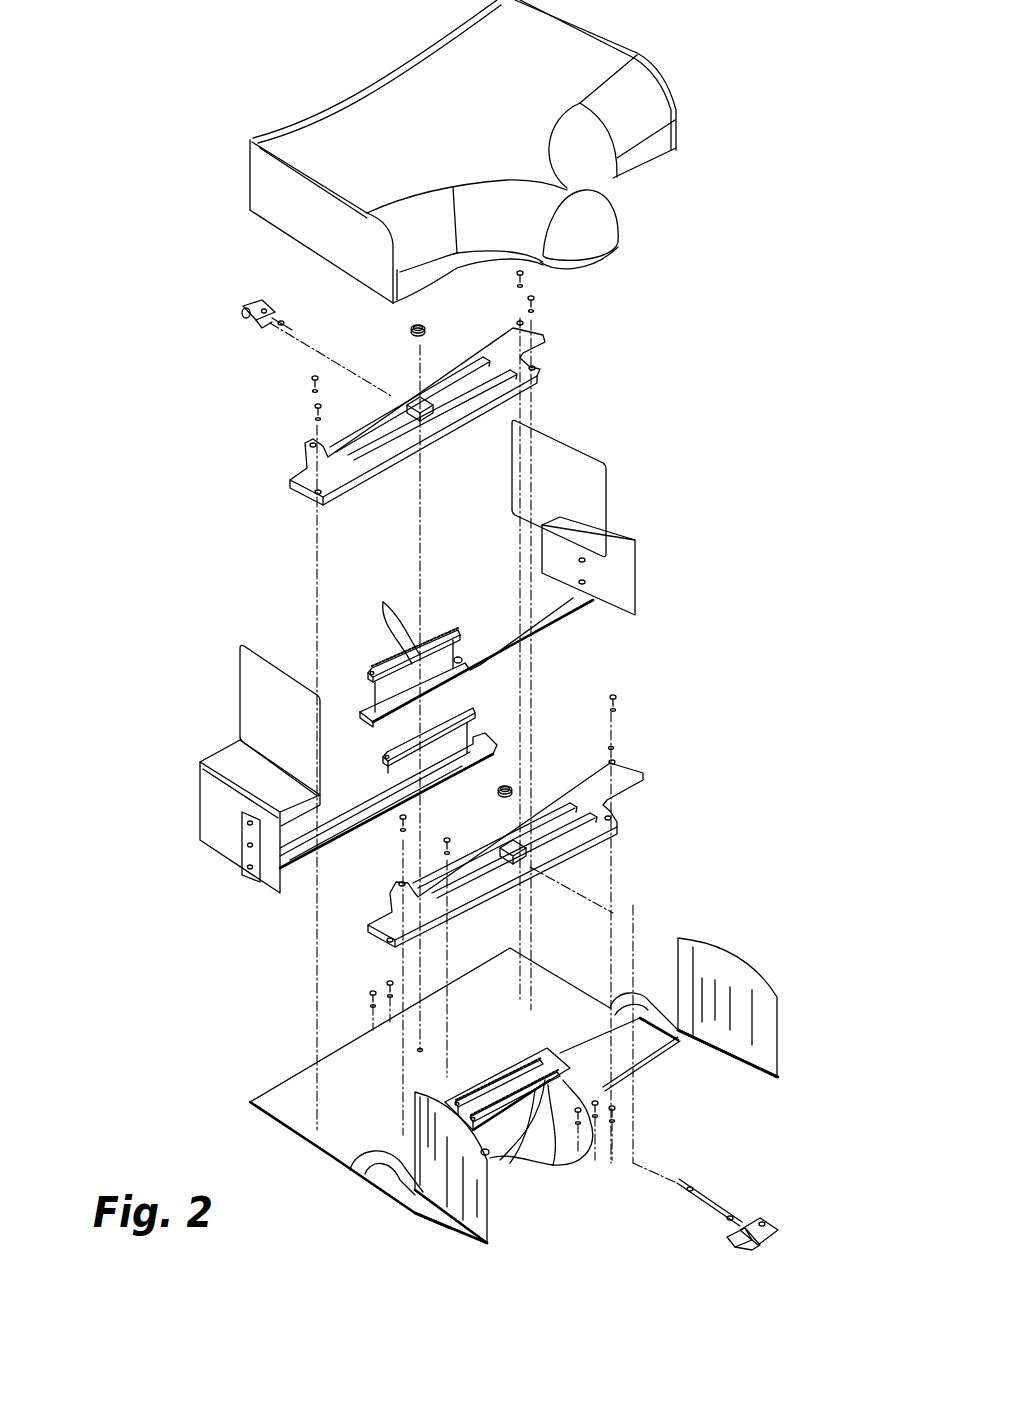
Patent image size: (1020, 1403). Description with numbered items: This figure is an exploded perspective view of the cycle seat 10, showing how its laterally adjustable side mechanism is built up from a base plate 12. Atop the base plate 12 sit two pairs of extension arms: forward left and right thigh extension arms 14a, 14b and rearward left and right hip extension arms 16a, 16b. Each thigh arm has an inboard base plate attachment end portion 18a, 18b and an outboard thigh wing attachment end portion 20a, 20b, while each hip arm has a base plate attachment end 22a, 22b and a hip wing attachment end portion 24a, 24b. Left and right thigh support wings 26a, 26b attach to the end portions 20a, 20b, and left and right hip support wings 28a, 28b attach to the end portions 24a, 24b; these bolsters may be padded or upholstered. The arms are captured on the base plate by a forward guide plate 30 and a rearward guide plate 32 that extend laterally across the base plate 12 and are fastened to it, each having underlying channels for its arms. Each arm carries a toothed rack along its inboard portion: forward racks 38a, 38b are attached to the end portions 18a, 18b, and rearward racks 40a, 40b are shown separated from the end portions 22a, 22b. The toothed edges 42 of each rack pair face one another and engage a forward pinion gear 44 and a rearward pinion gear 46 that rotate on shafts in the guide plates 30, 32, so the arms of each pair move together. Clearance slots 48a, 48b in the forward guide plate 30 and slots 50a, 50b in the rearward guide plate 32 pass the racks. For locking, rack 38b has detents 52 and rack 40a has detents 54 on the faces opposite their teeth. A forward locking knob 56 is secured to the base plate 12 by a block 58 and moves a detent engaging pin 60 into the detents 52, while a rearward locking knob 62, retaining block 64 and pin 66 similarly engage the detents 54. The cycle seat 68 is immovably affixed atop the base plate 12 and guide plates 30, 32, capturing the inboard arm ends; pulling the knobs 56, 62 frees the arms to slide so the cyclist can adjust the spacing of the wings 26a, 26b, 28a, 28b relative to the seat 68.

The cycle seat 10 is at (128, 995).
The base plate 12 is at (300, 1072).
The left side thigh extension arm 14a is at (638, 975).
The right side thigh extension arm 14b is at (352, 1168).
The left side hip extension arm 16a is at (550, 625).
The right side hip extension arm 16b is at (335, 855).
The base plate attachment end portion 18a is at (490, 1080).
The base plate attachment end portion 18b is at (637, 1077).
The thigh wing attachment end portion 20a is at (742, 1072).
The thigh wing attachment end portion 20b is at (430, 1223).
The base plate attachment end 22a is at (372, 718).
The base plate attachment end 22b is at (440, 790).
The hip wing attachment end portion 24a is at (608, 600).
The hip wing attachment end portion 24b is at (246, 870).
The left side thigh support wing 26a is at (780, 1030).
The right side thigh support wing 26b is at (495, 1222).
The left side hip support wing 28a is at (607, 500).
The right side hip support wing 28b is at (240, 700).
The forward guide plate 30 is at (650, 778).
The rearward guide plate 32 is at (552, 343).
The forward extension arm rack 38a is at (530, 1055).
The forward extension arm rack 38b is at (556, 1075).
The rearward rack 40a is at (452, 628).
The rearward rack 40b is at (475, 710).
The toothed edge 42 is at (458, 676).
The forward pinion gear 44 is at (513, 790).
The rearward pinion gear 46 is at (408, 330).
The rack clearance slot 48a is at (456, 880).
The rack clearance slot 48b is at (565, 830).
The rack clearance slot 50a is at (360, 456).
The rack clearance slot 50b is at (442, 410).
The detents 52 is at (560, 1168).
The detents 54 is at (388, 597).
The forward extension arm locking knob 56 is at (776, 1243).
The block 58 is at (768, 1216).
The detent engaging pin 60 is at (696, 1190).
The rearward extension arm locking knob 62 is at (243, 303).
The retaining block 64 is at (250, 326).
The pin 66 is at (272, 330).
The cycle seat 68 is at (490, 116).